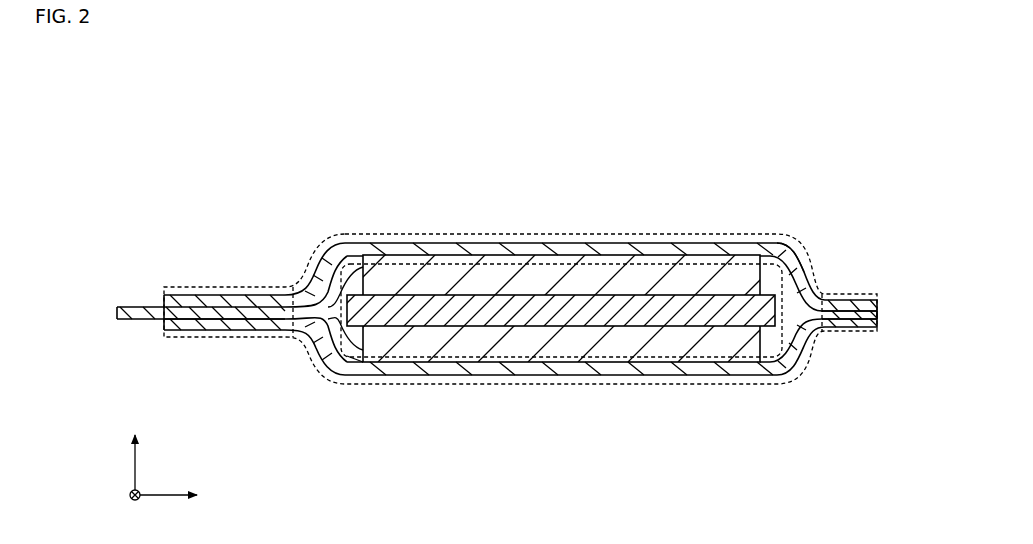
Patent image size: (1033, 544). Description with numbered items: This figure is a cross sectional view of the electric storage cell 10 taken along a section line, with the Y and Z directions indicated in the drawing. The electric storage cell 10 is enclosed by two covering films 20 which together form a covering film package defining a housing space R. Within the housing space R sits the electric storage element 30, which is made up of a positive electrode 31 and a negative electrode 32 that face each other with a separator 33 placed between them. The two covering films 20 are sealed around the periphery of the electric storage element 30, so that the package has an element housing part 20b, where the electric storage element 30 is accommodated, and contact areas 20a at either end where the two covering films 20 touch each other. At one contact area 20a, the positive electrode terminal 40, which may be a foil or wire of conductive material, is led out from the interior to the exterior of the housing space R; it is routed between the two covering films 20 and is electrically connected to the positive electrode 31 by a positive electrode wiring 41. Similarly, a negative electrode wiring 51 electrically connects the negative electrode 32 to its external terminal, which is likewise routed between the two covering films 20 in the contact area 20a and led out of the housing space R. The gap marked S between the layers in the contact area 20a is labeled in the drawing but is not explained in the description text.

The electric storage cell 10 is at (838, 136).
The covering film 20 is at (691, 245).
The contact area 20a is at (219, 287).
The element housing part 20b is at (403, 237).
The electric storage element 30 is at (637, 195).
The positive electrode 31 is at (464, 245).
The negative electrode 32 is at (529, 245).
The separator 33 is at (600, 245).
The positive electrode terminal 40 is at (147, 306).
The positive electrode wiring 41 is at (336, 249).
The negative electrode wiring 51 is at (347, 364).
The housing space R is at (781, 242).
The gap S is at (259, 298).